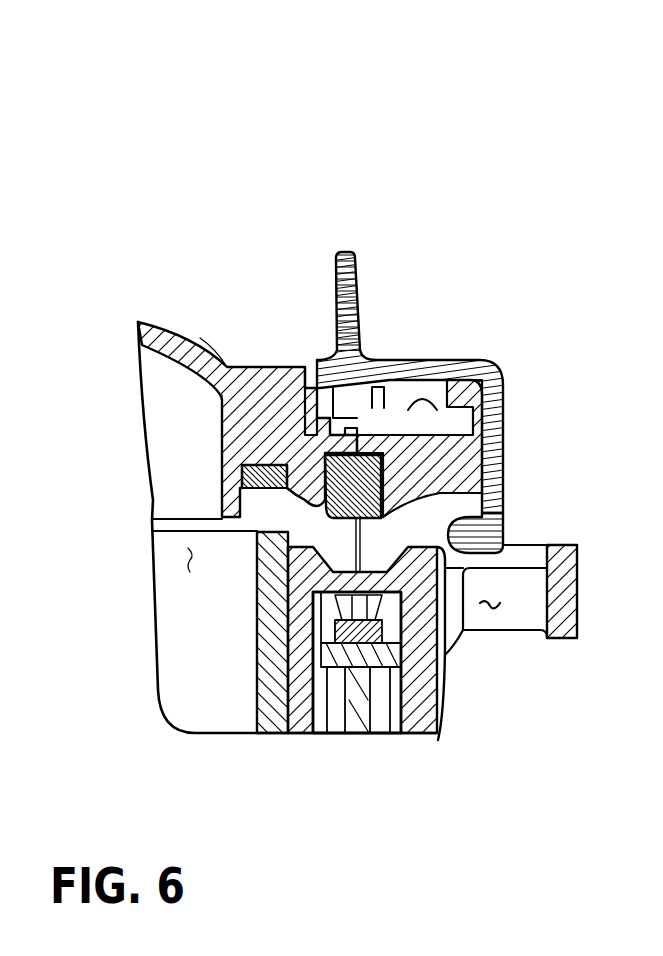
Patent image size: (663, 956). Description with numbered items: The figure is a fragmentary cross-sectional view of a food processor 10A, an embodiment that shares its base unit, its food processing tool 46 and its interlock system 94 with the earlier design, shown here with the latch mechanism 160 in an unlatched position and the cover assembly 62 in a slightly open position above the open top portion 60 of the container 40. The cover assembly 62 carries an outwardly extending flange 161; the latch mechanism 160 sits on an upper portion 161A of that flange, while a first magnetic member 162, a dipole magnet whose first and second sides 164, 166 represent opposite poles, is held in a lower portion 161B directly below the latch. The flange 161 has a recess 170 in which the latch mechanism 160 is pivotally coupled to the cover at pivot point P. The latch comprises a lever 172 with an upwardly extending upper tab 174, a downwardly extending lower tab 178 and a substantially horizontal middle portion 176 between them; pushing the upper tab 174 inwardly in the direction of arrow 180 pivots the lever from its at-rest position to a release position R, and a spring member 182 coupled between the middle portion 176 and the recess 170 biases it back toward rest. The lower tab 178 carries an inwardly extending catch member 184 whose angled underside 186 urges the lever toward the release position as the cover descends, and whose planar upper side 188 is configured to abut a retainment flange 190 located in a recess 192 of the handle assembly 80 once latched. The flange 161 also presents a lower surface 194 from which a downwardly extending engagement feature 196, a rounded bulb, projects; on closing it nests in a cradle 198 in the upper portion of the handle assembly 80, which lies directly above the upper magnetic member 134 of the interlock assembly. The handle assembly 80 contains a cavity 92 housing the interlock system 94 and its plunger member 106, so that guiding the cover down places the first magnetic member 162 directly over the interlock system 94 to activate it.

The food processor 10A is at (360, 187).
The cover assembly 62 is at (147, 290).
The outwardly extending flange 161 is at (250, 420).
The upper portion 161A is at (230, 330).
The lower portion 161B is at (230, 456).
The spring member 182 is at (226, 393).
The recess 170 is at (307, 363).
The arrow 180 is at (330, 261).
The latch mechanism 160 is at (474, 356).
The lever 172 is at (380, 334).
The upper tab 174 is at (360, 262).
The middle portion 176 is at (443, 357).
The pivot point P is at (470, 360).
The lower tab 178 is at (503, 390).
The first side 164 is at (482, 436).
The first magnetic member 162 is at (347, 483).
The second side 166 is at (470, 490).
The planar upper side 188 is at (503, 507).
The release position R is at (545, 528).
The angled underside 186 is at (398, 600).
The container 40 is at (264, 678).
The upper magnetic member 134 is at (265, 650).
The plunger member 106 is at (412, 550).
The cavity 92 is at (403, 713).
The interlock system 94 is at (416, 690).
The open top portion 60 is at (185, 533).
The food processing tool 46 is at (190, 560).
The lower surface 194 is at (312, 545).
The downwardly extending engagement feature 196 is at (320, 617).
The cradle 198 is at (300, 665).
The catch member 184 is at (510, 573).
The retainment flange 190 is at (473, 603).
The recess 192 is at (490, 568).
The handle assembly 80 is at (582, 600).